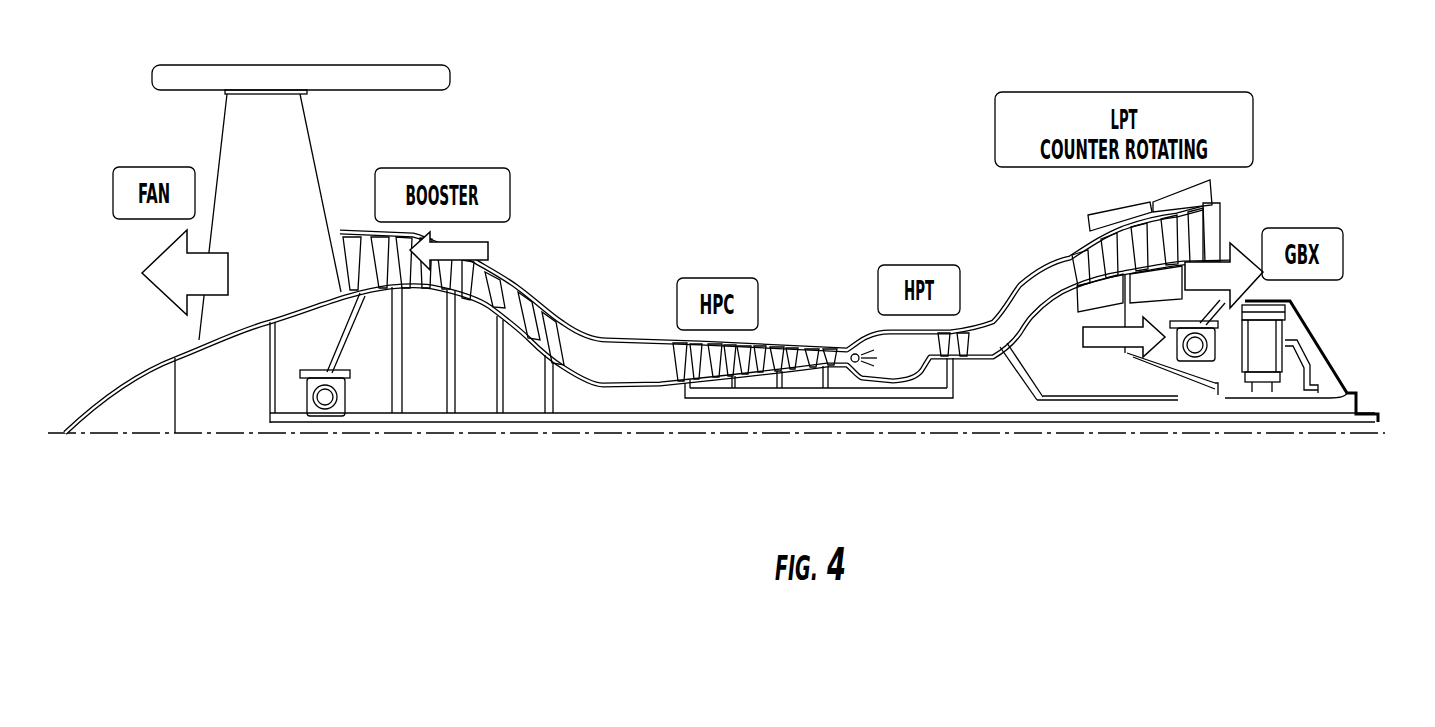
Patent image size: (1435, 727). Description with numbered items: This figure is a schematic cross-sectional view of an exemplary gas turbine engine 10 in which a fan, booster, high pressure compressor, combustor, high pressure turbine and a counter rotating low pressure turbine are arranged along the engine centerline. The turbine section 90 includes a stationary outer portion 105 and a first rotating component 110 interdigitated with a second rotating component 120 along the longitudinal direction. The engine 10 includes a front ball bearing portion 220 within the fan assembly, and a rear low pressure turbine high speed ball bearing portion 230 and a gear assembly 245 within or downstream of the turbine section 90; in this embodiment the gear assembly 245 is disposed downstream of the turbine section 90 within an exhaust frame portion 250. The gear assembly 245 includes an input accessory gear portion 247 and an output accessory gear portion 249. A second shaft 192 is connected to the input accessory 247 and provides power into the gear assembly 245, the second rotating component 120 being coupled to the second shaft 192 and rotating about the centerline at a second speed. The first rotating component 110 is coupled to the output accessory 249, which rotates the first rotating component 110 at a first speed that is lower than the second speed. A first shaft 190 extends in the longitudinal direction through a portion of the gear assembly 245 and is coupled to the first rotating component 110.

The engine 10 is at (736, 88).
The turbine section 90 is at (1142, 218).
The stationary outer portion 105 is at (1120, 208).
The first rotating component 110 is at (1222, 225).
The second rotating component 120 is at (1072, 270).
The first shaft 190 is at (742, 417).
The second shaft 192 is at (1062, 395).
The front ball bearing portion 220 is at (337, 416).
The rear low pressure turbine high speed ball bearing portion 230 is at (1185, 360).
The gear assembly 245 is at (1273, 360).
The input accessory gear portion 247 is at (1253, 384).
The output accessory gear portion 249 is at (1287, 301).
The exhaust frame portion 250 is at (1346, 355).